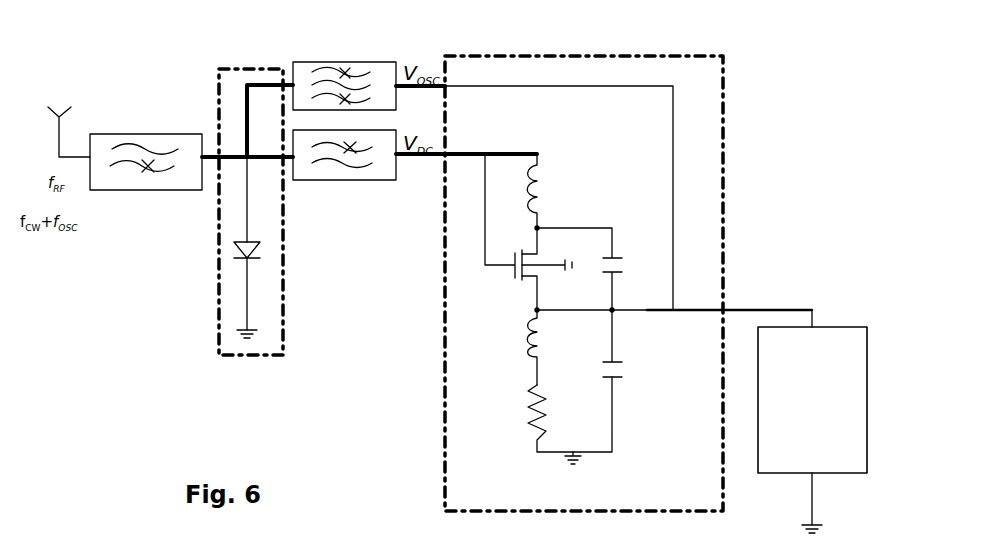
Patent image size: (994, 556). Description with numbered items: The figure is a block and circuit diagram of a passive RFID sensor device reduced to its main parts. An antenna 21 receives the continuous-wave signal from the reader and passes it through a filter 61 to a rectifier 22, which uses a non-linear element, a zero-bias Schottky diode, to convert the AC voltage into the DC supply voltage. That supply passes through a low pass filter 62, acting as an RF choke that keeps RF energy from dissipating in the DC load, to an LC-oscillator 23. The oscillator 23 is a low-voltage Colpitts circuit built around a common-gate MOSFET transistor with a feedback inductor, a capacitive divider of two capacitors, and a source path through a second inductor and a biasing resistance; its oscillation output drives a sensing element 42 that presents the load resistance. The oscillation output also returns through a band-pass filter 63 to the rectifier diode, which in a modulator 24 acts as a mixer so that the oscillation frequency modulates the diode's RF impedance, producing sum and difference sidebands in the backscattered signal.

The antenna 21 is at (59, 132).
The RF band-pass filter 61 is at (118, 191).
The rectifier 22 is at (252, 235).
The modulator 24 is at (278, 357).
The low-pass filter 62 is at (351, 182).
The band-pass filter 63 is at (357, 61).
The LC-oscillator 23 is at (602, 56).
The sensing element 42 is at (853, 327).